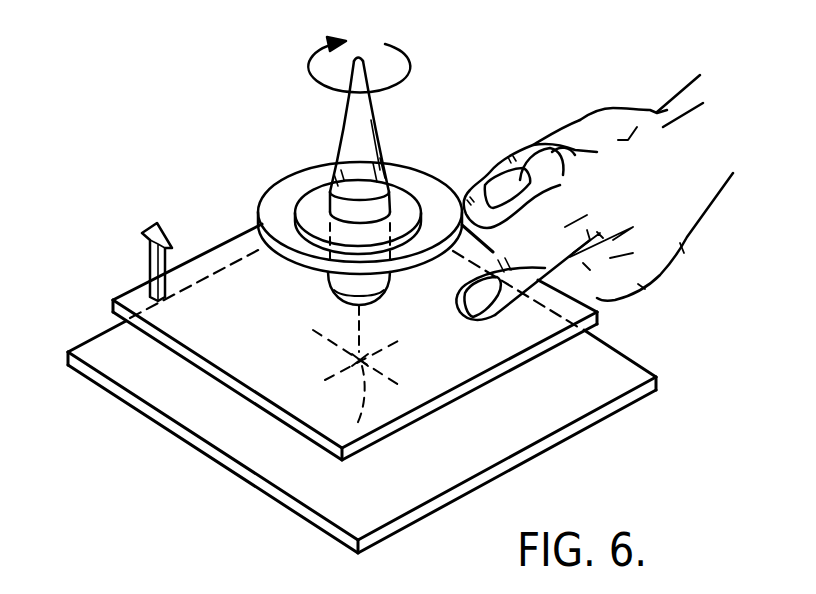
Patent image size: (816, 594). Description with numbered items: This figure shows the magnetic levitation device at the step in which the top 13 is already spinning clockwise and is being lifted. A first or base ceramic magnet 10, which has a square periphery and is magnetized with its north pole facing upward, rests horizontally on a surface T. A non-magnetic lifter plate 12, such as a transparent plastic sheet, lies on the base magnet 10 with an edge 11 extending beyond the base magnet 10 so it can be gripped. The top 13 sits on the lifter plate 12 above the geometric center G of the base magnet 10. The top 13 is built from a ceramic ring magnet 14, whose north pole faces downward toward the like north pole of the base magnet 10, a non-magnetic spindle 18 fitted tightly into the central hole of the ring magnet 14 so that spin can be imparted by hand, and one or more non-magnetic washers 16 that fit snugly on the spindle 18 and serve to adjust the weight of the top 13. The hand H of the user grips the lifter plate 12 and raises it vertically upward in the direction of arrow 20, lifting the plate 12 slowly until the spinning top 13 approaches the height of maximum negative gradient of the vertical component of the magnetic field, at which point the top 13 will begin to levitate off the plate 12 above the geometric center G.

The base ceramic magnet 10 is at (115, 393).
The edge 11 is at (572, 293).
The lifter plate 12 is at (207, 373).
The top 13 is at (362, 171).
The ceramic ring magnet 14 is at (437, 178).
The non-magnetic washers 16 is at (318, 186).
The spindle 18 is at (344, 117).
The arrow 20 is at (148, 252).
The geometric center G is at (357, 374).
The hand H is at (594, 197).
The surface T is at (660, 437).